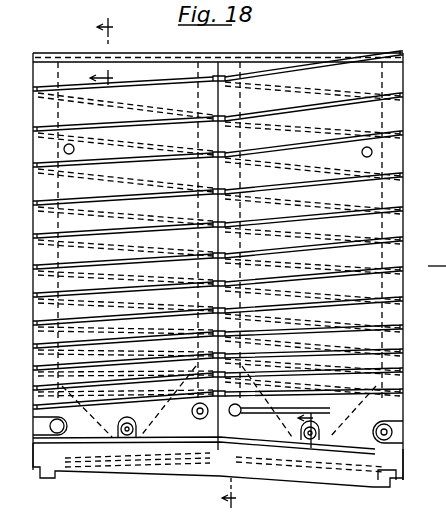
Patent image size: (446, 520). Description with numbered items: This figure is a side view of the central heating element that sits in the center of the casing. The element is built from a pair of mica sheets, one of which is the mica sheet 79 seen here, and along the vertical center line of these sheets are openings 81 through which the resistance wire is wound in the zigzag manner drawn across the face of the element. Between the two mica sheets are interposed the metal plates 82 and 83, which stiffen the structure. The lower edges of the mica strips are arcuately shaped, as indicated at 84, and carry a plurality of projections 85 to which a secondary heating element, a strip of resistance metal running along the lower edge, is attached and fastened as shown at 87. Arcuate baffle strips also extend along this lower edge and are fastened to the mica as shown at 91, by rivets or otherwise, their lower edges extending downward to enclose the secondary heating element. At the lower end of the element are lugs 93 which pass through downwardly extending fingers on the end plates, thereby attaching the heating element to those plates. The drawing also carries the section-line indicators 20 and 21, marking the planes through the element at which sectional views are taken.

The mica sheet 79 is at (395, 108).
The openings 81 is at (221, 76).
The metal plate 82 is at (311, 72).
The metal plate 83 is at (153, 70).
The arcuately shaped lower edge 84 is at (307, 460).
The projections 85 is at (207, 452).
The fastening of secondary heating element 87 is at (395, 430).
The fastening of baffle strips 91 is at (120, 424).
The lugs 93 is at (396, 481).
The section line 20 is at (112, 46).
The section line 21 is at (280, 464).